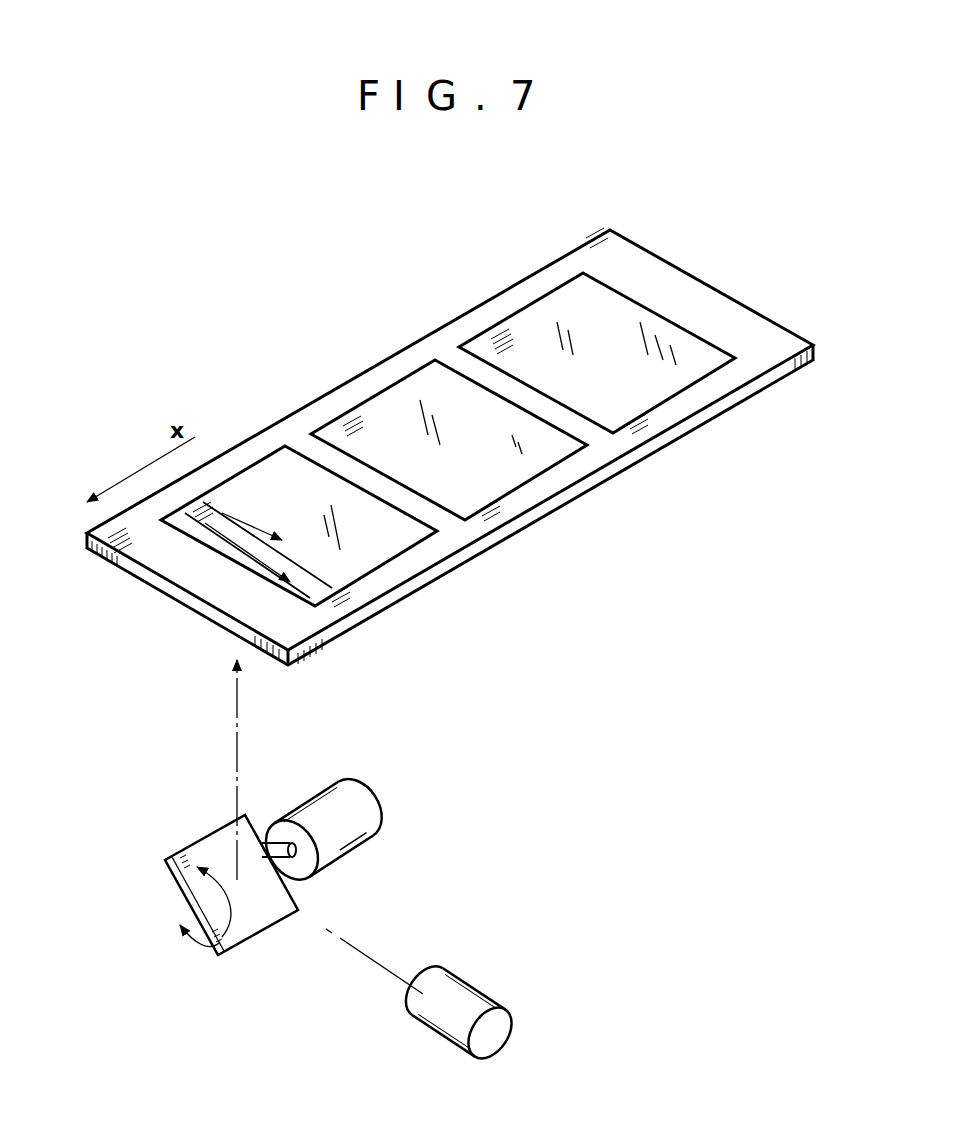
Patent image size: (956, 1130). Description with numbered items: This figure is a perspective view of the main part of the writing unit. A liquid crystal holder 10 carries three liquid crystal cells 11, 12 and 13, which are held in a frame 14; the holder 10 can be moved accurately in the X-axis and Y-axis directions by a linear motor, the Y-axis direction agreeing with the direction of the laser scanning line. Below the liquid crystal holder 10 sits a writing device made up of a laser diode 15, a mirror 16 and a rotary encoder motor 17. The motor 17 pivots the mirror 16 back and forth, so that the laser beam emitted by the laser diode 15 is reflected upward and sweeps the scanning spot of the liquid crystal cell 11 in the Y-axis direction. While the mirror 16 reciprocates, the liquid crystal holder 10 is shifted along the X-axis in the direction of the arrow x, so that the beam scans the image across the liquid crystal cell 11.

The liquid crystal holder 10 is at (592, 490).
The liquid crystal cell 11 is at (245, 478).
The liquid crystal cell 12 is at (362, 412).
The liquid crystal cell 13 is at (518, 322).
The frame 14 is at (712, 292).
The laser diode 15 is at (488, 1003).
The mirror 16 is at (262, 923).
The rotary encoder motor 17 is at (376, 840).